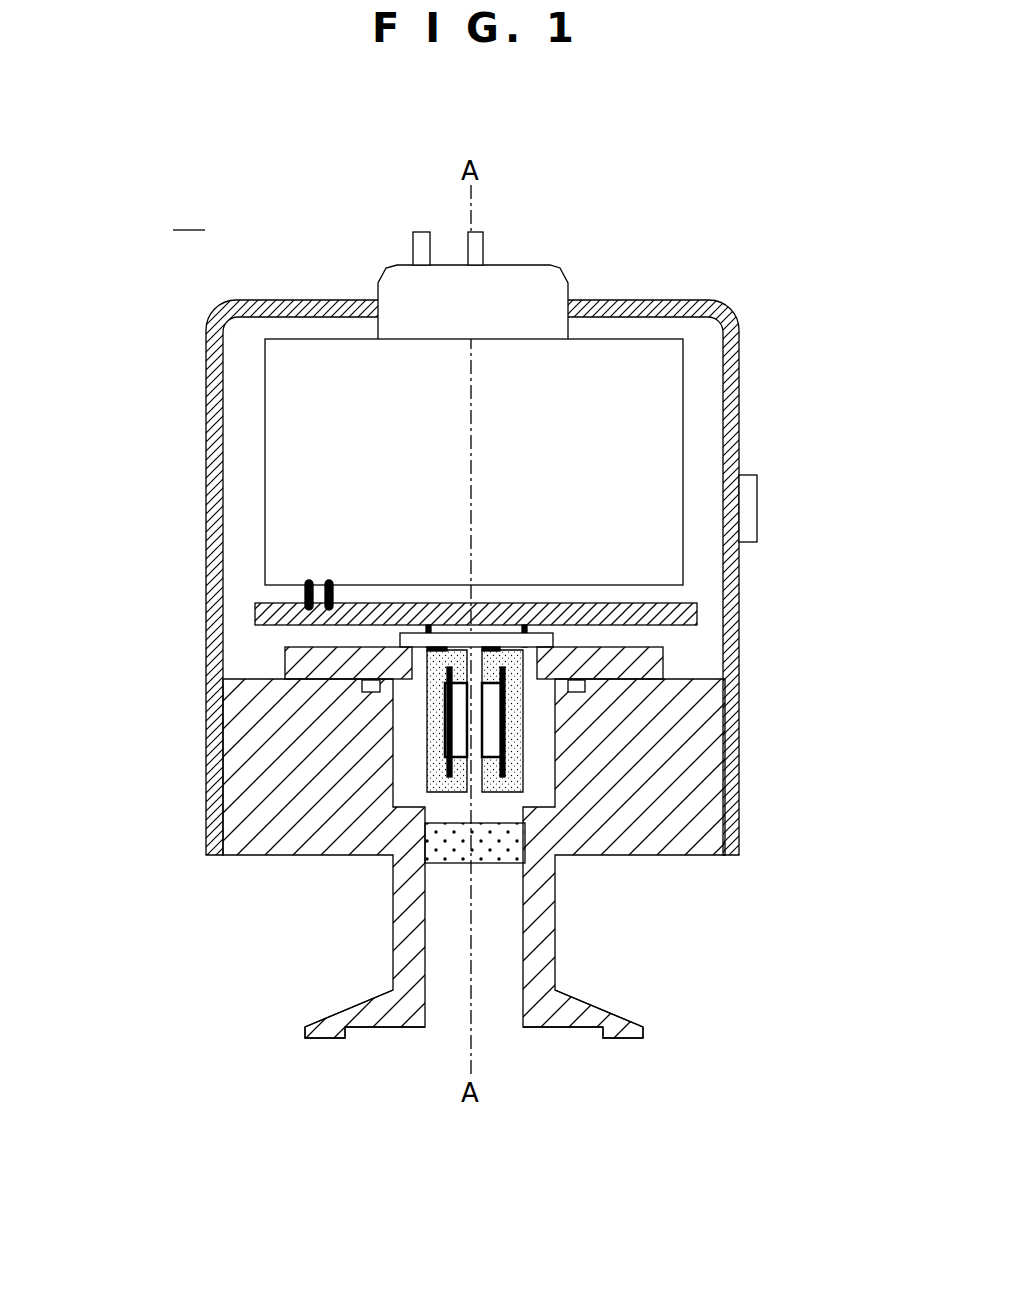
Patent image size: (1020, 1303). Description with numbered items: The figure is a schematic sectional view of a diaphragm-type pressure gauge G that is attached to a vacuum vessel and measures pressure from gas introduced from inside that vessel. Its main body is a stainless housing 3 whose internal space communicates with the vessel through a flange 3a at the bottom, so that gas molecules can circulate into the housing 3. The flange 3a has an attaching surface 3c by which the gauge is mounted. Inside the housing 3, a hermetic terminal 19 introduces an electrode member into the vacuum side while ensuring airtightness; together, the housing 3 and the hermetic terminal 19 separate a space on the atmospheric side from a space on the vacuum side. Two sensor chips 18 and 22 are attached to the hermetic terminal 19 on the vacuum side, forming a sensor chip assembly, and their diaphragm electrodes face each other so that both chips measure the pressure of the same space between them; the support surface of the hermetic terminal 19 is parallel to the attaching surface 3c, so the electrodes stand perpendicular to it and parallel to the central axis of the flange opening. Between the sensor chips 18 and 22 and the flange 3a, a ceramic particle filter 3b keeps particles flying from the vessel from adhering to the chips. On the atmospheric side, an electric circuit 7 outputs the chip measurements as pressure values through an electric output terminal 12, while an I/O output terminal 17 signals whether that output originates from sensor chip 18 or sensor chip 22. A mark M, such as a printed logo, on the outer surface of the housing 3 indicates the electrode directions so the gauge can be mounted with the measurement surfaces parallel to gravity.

The housing 3 is at (212, 430).
The flange 3a is at (590, 1003).
The particle filter 3b is at (447, 852).
The attaching surface 3c is at (327, 1040).
The electric circuit 7 is at (633, 450).
The electric output terminal 12 is at (417, 247).
The I/O output terminal 17 is at (486, 245).
The sensor chip 18 is at (527, 747).
The hermetic terminal 19 is at (697, 612).
The sensor chip 22 is at (420, 747).
The mark M is at (750, 513).
The diaphragm-type pressure gauge G is at (189, 216).